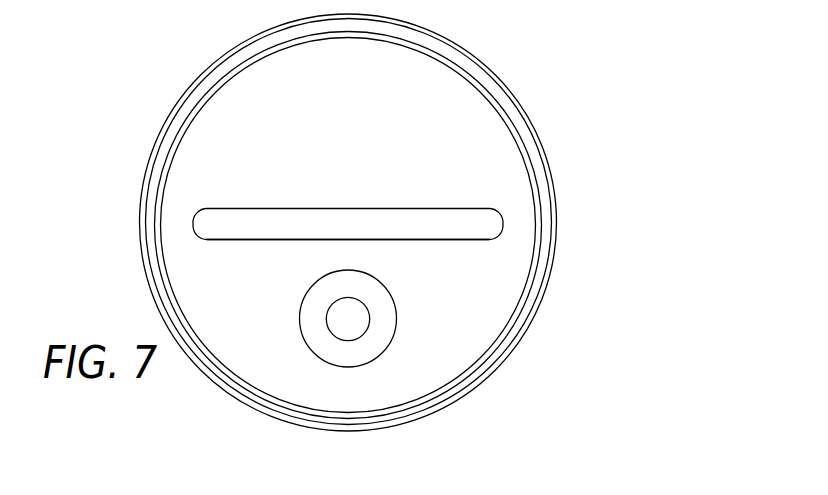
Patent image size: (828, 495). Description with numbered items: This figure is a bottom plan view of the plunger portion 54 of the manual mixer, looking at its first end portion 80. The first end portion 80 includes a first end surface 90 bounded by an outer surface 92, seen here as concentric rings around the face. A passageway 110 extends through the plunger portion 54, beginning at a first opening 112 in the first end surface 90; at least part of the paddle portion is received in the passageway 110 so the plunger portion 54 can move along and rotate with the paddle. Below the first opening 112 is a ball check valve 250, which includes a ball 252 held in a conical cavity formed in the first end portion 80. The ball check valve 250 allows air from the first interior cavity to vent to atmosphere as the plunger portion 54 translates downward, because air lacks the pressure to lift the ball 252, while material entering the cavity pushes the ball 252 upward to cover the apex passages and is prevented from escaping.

The plunger portion 54 is at (483, 405).
The outer surface 92 is at (495, 343).
The first end portion 80 is at (520, 313).
The first end surface 90 is at (518, 200).
The first opening 112 is at (415, 210).
The passageway 110 is at (410, 233).
The ball check valve 250 is at (367, 378).
The ball 252 is at (348, 318).